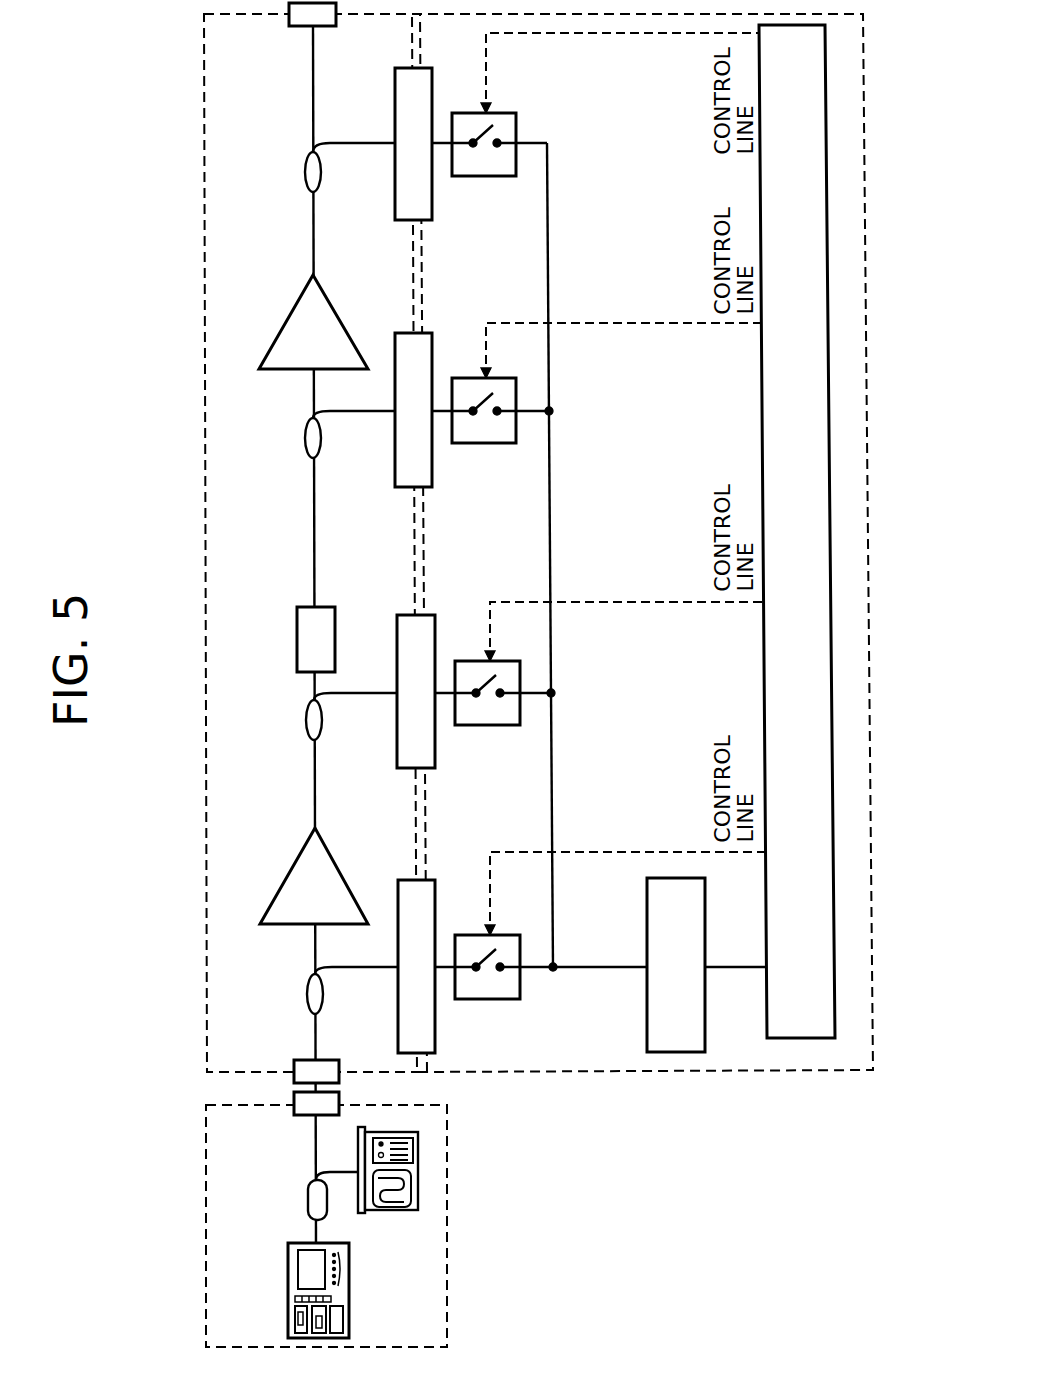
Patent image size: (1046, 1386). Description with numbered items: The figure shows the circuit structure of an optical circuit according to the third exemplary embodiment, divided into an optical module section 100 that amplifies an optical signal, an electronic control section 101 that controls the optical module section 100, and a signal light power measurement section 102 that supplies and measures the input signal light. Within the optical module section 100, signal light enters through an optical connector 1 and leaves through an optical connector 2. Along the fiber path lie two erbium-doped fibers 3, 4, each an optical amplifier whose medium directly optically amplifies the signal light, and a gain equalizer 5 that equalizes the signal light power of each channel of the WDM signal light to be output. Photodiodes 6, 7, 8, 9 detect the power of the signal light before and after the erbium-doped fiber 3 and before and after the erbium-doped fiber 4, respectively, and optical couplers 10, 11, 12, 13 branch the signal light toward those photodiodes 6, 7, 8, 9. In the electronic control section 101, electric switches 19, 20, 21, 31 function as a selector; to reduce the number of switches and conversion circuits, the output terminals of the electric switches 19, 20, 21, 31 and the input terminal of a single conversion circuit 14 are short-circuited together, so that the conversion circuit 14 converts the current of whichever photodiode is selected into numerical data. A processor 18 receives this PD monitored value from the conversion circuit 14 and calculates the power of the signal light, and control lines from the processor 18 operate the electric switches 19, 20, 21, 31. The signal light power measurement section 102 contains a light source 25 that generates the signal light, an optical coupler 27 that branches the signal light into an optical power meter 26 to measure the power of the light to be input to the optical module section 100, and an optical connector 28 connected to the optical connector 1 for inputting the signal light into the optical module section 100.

The optical connector 1 is at (294, 1068).
The optical connector 2 is at (289, 22).
The erbium-doped fiber 3 is at (285, 882).
The erbium-doped fiber 4 is at (283, 328).
The gain equalizer 5 is at (297, 632).
The photodiode 6 is at (398, 905).
The photodiode 7 is at (397, 630).
The photodiode 8 is at (395, 350).
The photodiode 9 is at (395, 84).
The optical coupler 10 is at (308, 994).
The optical coupler 11 is at (307, 720).
The optical coupler 12 is at (306, 438).
The optical coupler 13 is at (306, 172).
The conversion circuit 14 is at (647, 1020).
The processor 18 is at (767, 1010).
The electric switch 19 is at (503, 999).
The electric switch 20 is at (503, 725).
The electric switch 21 is at (500, 443).
The electric switch 31 is at (500, 176).
The light source 25 is at (288, 1300).
The optical power meter 26 is at (410, 1213).
The optical coupler 27 is at (308, 1200).
The optical connector 28 is at (294, 1107).
The optical module section 100 is at (207, 1036).
The electronic control section 101 is at (551, 1072).
The signal light power measurement section 102 is at (207, 1228).